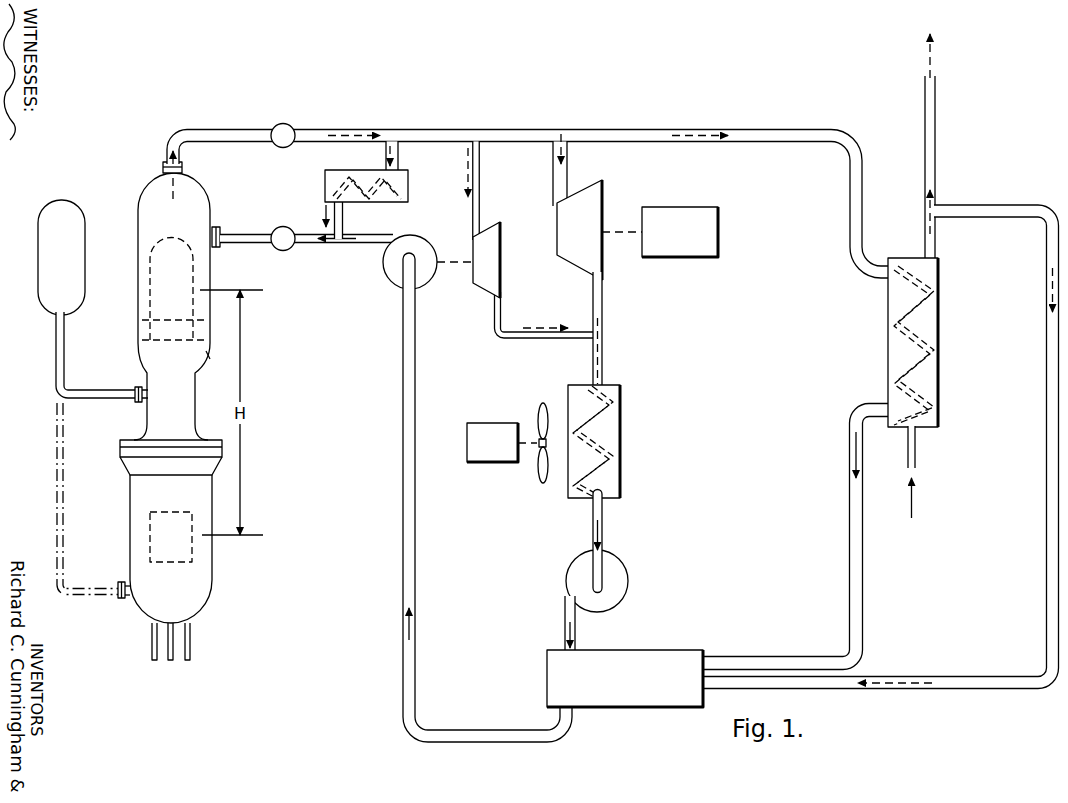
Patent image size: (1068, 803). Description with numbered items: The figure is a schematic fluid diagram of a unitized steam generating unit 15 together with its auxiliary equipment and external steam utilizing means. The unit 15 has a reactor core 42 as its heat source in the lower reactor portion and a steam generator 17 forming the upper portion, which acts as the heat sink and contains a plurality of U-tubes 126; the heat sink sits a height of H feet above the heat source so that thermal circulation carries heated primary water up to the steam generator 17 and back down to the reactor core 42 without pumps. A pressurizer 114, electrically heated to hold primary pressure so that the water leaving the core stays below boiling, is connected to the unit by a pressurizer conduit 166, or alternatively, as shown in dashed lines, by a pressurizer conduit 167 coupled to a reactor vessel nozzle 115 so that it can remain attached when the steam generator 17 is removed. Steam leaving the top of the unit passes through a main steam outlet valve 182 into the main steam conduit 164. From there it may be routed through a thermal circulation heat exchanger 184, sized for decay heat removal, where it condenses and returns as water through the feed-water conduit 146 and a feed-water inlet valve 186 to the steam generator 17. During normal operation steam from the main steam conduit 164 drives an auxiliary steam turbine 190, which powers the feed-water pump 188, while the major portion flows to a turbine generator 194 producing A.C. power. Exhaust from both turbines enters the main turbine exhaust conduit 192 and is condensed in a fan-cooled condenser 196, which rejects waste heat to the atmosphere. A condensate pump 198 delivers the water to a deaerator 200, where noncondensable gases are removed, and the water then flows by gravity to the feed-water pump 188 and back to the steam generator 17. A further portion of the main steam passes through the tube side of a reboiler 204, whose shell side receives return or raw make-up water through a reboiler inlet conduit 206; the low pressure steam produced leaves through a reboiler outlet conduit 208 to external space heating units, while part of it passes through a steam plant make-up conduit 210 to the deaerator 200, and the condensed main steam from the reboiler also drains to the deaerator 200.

The unitized steam generating unit 15 is at (205, 436).
The steam generator 17 is at (138, 252).
The reactor core 42 is at (150, 517).
The pressurizer 114 is at (85, 212).
The reactor vessel nozzle 115 is at (118, 600).
The U-tubes 126 is at (190, 234).
The feed-water conduit 146 is at (226, 233).
The main steam conduit 164 is at (202, 128).
The pressurizer conduit 166 is at (113, 400).
The pressurizer conduit 167 is at (63, 488).
The main steam outlet valve 182 is at (291, 127).
The thermal circulation heat exchanger 184 is at (325, 182).
The feed-water inlet valve 186 is at (279, 250).
The feed-water pump 188 is at (384, 268).
The auxiliary steam turbine 190 is at (503, 238).
The main turbine exhaust conduit 192 is at (603, 331).
The turbine generator 194 is at (605, 203).
The fan-cooled condenser 196 is at (621, 441).
The condensate pump 198 is at (629, 580).
The deaerator 200 is at (547, 667).
The reboiler 204 is at (888, 316).
The reboiler inlet conduit 206 is at (916, 447).
The reboiler outlet conduit 208 is at (925, 110).
The steam plant make-up conduit 210 is at (1047, 328).